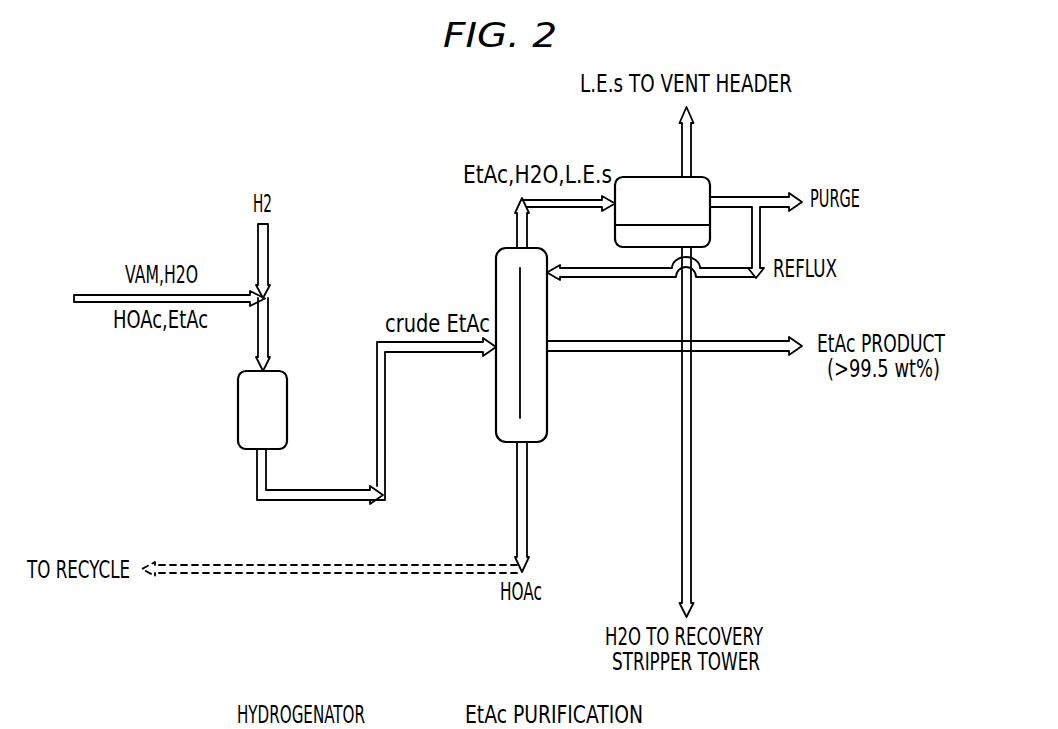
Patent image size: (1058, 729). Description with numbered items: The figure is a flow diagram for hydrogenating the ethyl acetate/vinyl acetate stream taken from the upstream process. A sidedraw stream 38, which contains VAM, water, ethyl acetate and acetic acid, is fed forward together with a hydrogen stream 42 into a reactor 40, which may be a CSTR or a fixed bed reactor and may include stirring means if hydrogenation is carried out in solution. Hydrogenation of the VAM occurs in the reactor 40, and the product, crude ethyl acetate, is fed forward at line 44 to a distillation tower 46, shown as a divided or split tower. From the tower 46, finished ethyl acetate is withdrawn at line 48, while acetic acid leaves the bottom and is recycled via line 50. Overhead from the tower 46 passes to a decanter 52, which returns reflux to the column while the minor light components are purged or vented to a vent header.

The sidedraw stream 38 is at (89, 294).
The hydrogen stream 42 is at (268, 252).
The reactor 40 is at (238, 410).
The crude ethyl acetate feed 44 is at (315, 500).
The distillation tower 46 is at (547, 408).
The finished ethyl acetate withdrawal 48 is at (742, 352).
The acetic acid recycle line 50 is at (292, 576).
The decanter 52 is at (643, 177).